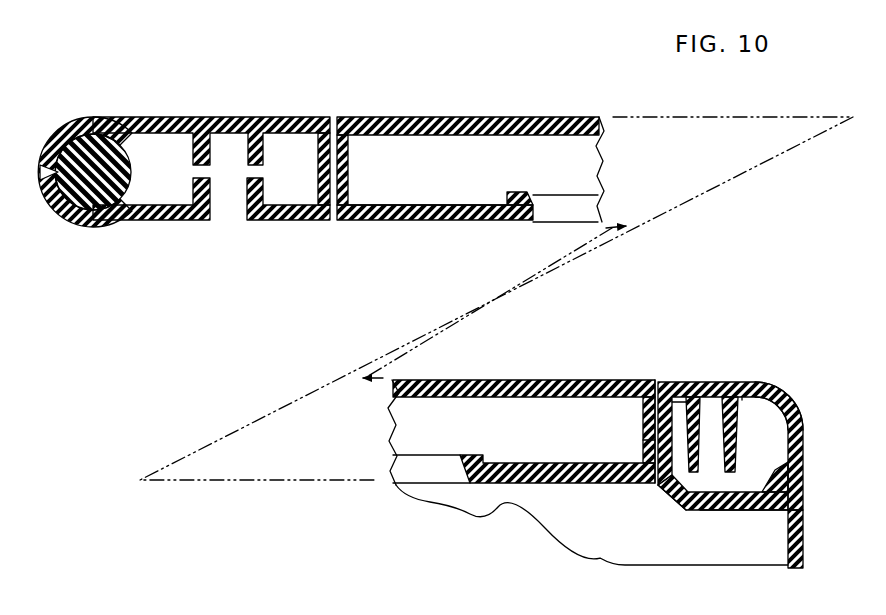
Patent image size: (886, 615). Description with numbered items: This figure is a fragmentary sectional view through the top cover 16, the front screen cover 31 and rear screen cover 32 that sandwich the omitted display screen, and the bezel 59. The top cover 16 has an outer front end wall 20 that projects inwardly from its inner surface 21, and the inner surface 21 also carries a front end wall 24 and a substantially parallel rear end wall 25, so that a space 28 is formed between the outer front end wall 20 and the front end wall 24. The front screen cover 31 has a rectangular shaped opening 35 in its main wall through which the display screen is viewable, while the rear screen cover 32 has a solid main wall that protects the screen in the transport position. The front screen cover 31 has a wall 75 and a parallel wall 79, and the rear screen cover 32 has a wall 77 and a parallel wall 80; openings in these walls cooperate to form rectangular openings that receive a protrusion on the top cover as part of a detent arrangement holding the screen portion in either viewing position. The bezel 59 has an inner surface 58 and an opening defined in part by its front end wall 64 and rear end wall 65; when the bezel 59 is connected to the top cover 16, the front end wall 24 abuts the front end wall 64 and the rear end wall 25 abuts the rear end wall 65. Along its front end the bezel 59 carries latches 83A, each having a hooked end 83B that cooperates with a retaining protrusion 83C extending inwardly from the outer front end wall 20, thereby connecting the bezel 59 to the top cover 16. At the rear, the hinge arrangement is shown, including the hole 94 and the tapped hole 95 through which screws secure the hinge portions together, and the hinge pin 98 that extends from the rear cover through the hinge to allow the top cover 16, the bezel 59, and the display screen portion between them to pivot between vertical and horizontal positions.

The top cover 16 is at (445, 314).
The outer front end wall 20 is at (804, 545).
The inner surface 21 is at (721, 398).
The front end wall 24 is at (762, 412).
The rear end wall 25 is at (310, 140).
The space 28 is at (788, 396).
The front screen cover 31 is at (467, 224).
The rear screen cover 32 is at (496, 303).
The rectangular shaped opening 35 is at (528, 222).
The inner surface 58 is at (757, 513).
The bezel 59 is at (172, 225).
The front end wall 64 is at (694, 512).
The rear end wall 65 is at (268, 222).
The wall 75 is at (647, 438).
The wall 77 is at (648, 413).
The wall 79 is at (383, 222).
The wall 80 is at (348, 155).
The latches 83A is at (786, 425).
The hooked end 83B is at (788, 490).
The retaining protrusion 83C is at (768, 458).
The hole 94 is at (44, 205).
The tapped hole 95 is at (49, 122).
The hinge pin 98 is at (133, 155).